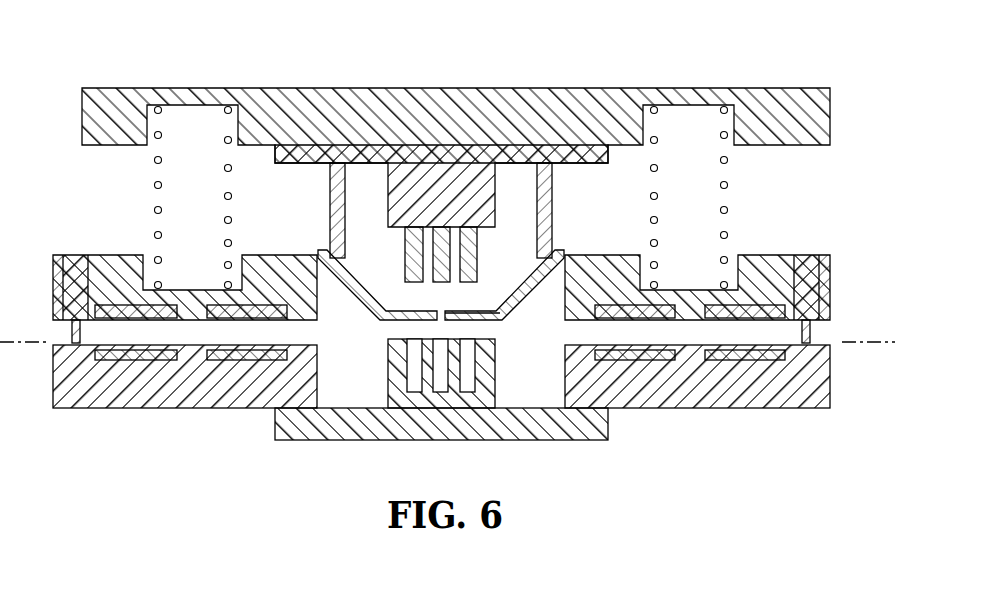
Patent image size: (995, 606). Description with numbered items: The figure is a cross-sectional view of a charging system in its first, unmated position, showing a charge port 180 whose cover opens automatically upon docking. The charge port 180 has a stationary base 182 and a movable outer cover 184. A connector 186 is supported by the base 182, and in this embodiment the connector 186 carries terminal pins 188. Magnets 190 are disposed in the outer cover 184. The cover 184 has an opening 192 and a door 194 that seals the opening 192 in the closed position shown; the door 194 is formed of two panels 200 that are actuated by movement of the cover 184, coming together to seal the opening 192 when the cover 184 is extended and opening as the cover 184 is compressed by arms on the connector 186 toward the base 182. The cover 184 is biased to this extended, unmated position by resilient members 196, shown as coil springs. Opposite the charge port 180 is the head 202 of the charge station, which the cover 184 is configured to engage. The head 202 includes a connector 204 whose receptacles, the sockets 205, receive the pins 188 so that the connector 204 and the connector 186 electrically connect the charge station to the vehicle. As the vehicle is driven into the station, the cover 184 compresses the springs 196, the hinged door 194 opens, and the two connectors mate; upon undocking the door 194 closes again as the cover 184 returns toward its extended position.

The charge port 180 is at (456, 151).
The stationary base 182 is at (390, 88).
The movable outer cover 184 is at (831, 292).
The connector 186 is at (445, 150).
The terminal pins 188 is at (405, 256).
The magnets 190 is at (756, 255).
The opening 192 is at (560, 256).
The door 194 is at (537, 305).
The resilient members 196 is at (153, 205).
The panels 200 is at (347, 297).
The head 202 is at (760, 383).
The connector 204 is at (483, 392).
The sockets 205 is at (425, 363).